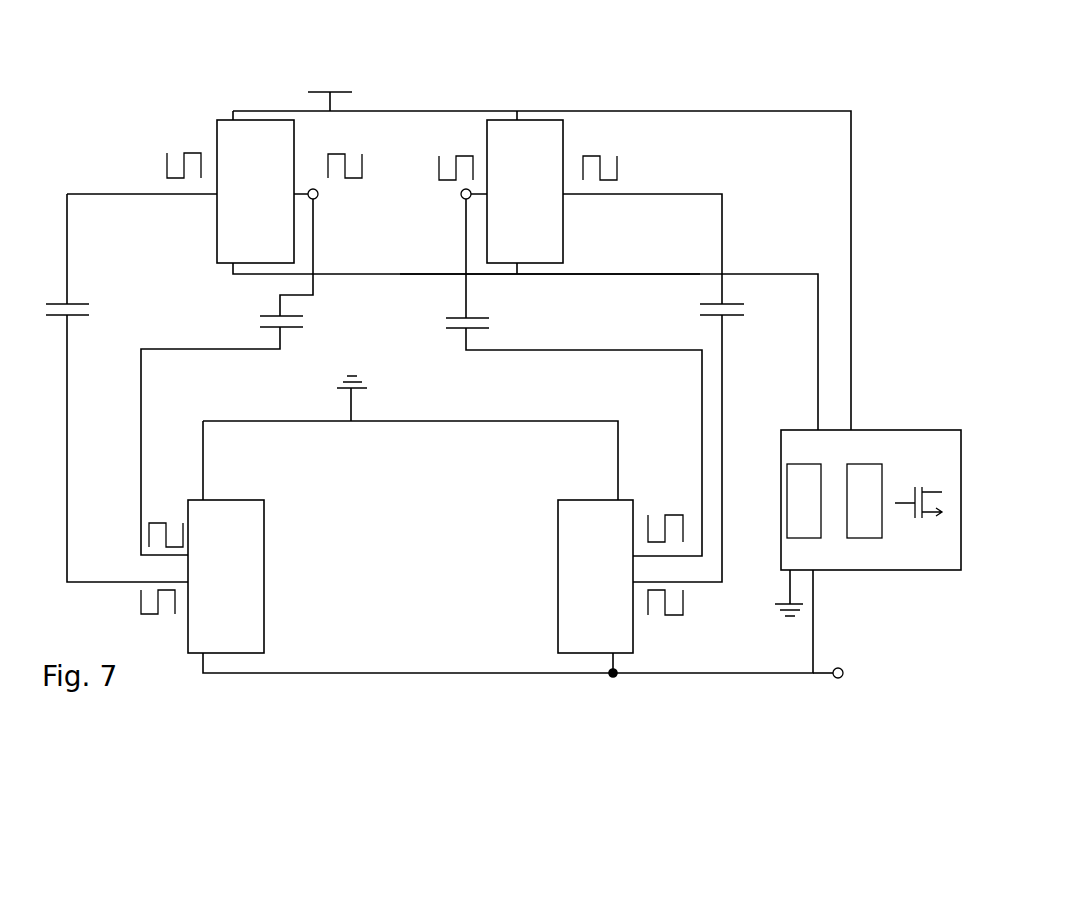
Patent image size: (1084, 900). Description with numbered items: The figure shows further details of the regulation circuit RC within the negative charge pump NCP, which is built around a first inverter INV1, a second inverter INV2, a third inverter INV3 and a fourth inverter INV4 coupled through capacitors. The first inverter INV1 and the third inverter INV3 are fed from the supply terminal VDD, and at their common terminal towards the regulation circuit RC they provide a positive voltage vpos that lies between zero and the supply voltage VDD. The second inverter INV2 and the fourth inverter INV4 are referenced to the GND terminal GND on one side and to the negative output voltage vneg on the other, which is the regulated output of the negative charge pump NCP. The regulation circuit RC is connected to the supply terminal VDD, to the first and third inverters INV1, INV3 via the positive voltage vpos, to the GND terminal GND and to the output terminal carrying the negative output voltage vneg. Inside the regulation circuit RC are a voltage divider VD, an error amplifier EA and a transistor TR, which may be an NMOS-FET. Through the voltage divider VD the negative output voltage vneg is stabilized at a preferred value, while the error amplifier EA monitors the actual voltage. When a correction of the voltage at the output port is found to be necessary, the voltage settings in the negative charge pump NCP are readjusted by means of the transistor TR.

The negative charge pump NCP is at (230, 746).
The first inverter INV1 is at (217, 243).
The second inverter INV2 is at (264, 556).
The third inverter INV3 is at (563, 130).
The fourth inverter INV4 is at (558, 575).
The regulation circuit RC is at (897, 430).
The voltage divider VD is at (787, 523).
The error amplifier EA is at (867, 540).
The transistor TR is at (918, 486).
The supply terminal VDD is at (335, 86).
The GND terminal GND is at (389, 396).
The positive voltage vpos is at (550, 258).
The negative output voltage vneg is at (830, 692).